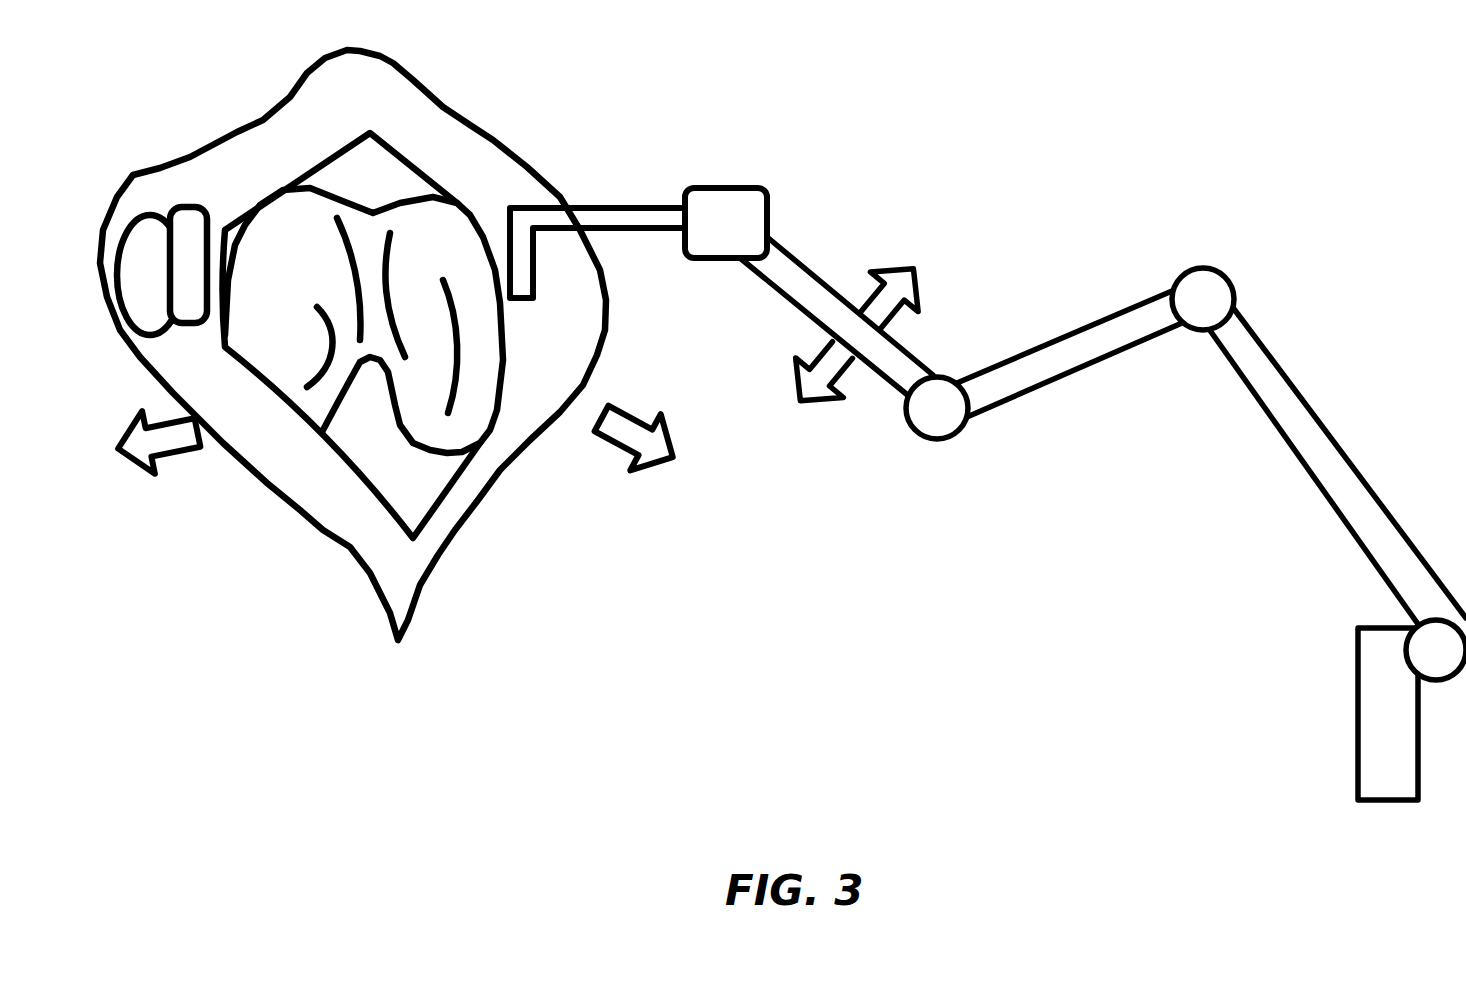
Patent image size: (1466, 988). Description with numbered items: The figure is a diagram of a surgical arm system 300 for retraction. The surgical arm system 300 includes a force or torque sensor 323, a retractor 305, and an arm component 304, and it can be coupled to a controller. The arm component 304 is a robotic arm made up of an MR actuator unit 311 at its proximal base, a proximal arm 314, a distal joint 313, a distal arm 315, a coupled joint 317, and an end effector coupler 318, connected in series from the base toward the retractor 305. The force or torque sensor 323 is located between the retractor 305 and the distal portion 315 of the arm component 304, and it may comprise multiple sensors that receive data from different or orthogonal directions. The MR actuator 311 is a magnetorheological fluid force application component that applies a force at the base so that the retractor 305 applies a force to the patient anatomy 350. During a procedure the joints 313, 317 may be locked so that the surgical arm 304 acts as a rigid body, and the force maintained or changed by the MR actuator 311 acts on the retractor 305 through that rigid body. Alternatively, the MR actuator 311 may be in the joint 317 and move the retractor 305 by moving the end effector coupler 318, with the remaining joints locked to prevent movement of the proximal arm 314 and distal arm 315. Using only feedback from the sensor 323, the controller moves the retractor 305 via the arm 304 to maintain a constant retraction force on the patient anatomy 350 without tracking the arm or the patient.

The surgical arm system 300 is at (1267, 98).
The arm component 304 is at (1078, 493).
The retractor 305 is at (593, 203).
The MR actuator unit 311 is at (1421, 622).
The distal joint 313 is at (1228, 272).
The proximal arm 314 is at (1317, 408).
The distal arm 315 is at (1045, 387).
The coupled joint 317 is at (939, 442).
The end effector coupler 318 is at (820, 275).
The force or torque sensor 323 is at (752, 185).
The patient anatomy 350 is at (463, 77).